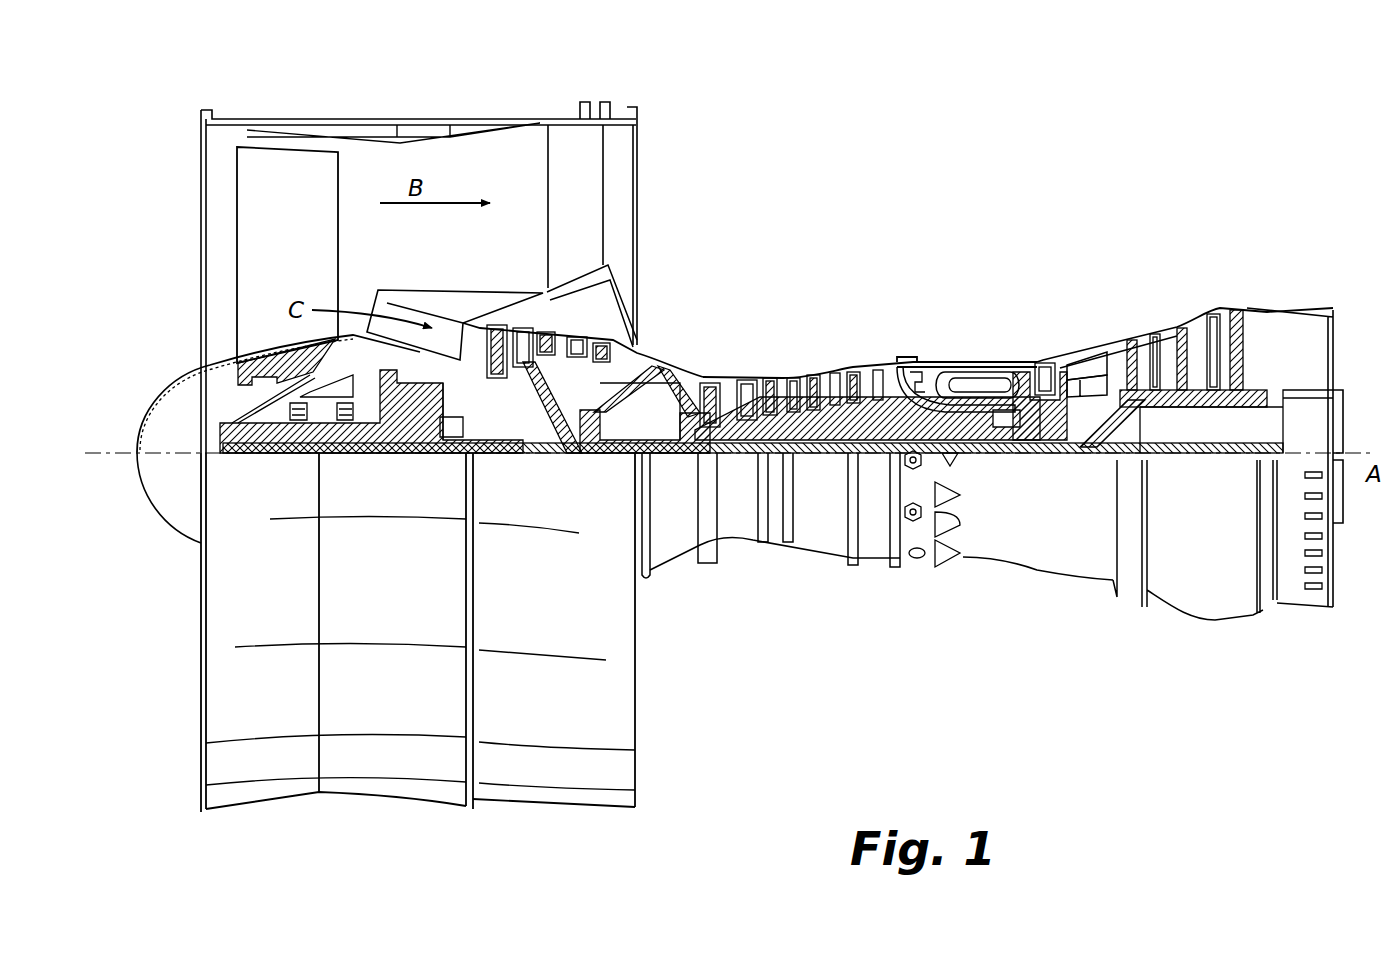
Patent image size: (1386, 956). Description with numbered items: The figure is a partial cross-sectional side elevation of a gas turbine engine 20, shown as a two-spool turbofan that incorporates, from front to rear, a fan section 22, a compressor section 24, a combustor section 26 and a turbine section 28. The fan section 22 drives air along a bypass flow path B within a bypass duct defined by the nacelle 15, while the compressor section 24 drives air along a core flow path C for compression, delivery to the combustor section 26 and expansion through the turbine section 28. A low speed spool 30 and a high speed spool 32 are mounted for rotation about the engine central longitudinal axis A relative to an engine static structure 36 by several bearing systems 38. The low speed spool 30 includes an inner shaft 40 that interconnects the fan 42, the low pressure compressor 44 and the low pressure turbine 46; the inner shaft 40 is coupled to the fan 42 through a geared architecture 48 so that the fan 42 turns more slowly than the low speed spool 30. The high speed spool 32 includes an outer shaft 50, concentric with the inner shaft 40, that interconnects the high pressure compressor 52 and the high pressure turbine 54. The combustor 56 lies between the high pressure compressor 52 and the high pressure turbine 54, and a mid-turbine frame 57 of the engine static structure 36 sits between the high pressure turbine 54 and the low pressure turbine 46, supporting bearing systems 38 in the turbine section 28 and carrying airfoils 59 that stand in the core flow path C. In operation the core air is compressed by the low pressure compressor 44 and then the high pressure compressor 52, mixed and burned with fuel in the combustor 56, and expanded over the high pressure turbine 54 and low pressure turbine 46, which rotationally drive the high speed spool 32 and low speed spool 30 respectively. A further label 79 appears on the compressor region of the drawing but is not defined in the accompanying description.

The nacelle 15 is at (440, 120).
The gas turbine engine 20 is at (923, 160).
The fan section 22 is at (371, 112).
The compressor section 24 is at (693, 353).
The combustor section 26 is at (937, 343).
The turbine section 28 is at (1167, 270).
The low speed spool 30 is at (828, 460).
The high speed spool 32 is at (863, 417).
The engine static structure 36 is at (873, 560).
The bearing systems 38 is at (585, 455).
The inner shaft 40 is at (657, 457).
The fan 42 is at (300, 251).
The low pressure compressor 44 is at (533, 323).
The low pressure turbine 46 is at (1193, 333).
The geared architecture 48 is at (423, 455).
The outer shaft 50 is at (977, 442).
The high pressure compressor 52 is at (780, 377).
The high pressure turbine 54 is at (1043, 360).
The combustor 56 is at (967, 387).
The mid-turbine frame 57 is at (1090, 350).
The airfoils 59 is at (1087, 377).
The compressor stage 79 is at (807, 417).